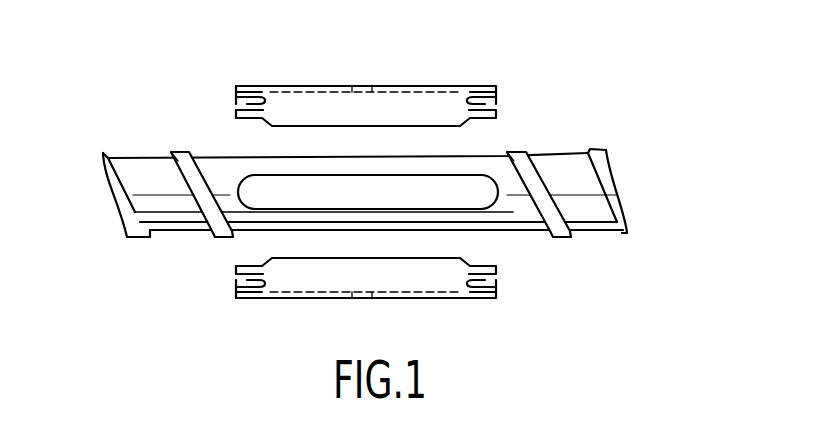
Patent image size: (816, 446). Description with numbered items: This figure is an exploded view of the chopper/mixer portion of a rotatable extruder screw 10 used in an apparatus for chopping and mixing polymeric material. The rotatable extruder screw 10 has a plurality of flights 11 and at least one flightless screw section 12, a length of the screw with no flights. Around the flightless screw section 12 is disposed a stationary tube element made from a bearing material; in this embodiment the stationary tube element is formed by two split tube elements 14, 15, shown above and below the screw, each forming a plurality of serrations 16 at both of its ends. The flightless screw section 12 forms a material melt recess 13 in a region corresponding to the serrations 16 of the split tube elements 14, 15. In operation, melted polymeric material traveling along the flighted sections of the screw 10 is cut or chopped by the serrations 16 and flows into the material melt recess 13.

The rotatable extruder screw 10 is at (640, 151).
The flights 11 is at (517, 152).
The flightless screw section 12 is at (222, 155).
The material melt recess 13 is at (486, 195).
The split tube element 14 is at (412, 87).
The split tube element 15 is at (438, 299).
The serrations 16 is at (238, 100).